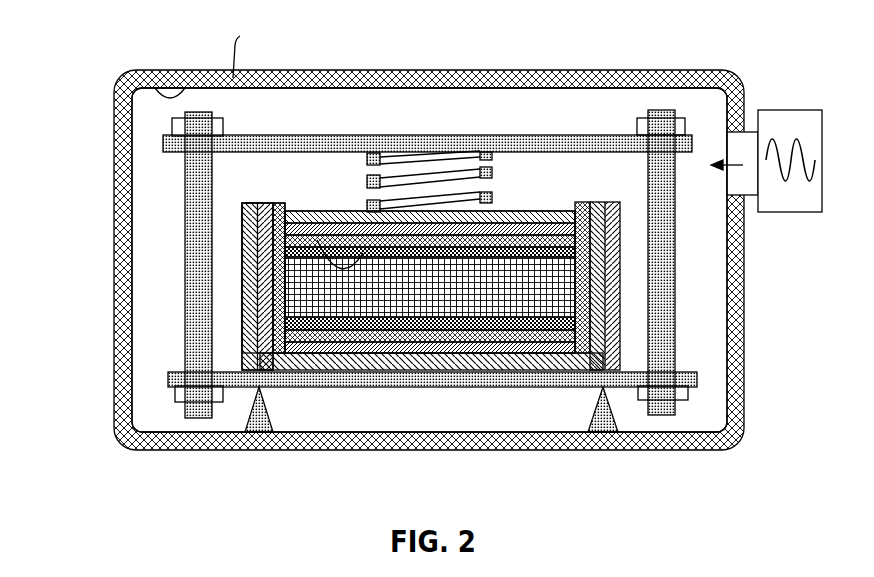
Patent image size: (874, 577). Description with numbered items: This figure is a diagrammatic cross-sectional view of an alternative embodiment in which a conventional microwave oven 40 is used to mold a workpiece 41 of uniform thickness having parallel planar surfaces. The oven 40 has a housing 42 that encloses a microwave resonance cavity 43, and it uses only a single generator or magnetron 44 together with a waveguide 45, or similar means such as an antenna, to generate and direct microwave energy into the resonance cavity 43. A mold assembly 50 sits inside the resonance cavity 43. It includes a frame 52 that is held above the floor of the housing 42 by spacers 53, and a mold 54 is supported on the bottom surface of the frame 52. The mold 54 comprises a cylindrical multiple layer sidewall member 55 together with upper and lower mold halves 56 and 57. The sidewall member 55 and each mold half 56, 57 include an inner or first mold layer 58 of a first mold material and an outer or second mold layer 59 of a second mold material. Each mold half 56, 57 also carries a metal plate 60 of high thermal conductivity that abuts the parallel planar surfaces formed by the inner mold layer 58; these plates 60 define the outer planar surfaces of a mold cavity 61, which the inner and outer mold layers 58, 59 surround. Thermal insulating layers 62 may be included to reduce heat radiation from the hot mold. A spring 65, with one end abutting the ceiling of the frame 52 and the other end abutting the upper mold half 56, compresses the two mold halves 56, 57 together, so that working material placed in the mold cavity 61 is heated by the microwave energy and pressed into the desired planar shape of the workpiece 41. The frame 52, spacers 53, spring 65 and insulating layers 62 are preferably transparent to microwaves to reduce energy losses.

The conventional microwave oven 40 is at (108, 75).
The workpiece 41 is at (320, 285).
The housing 42 is at (118, 128).
The microwave resonance cavity 43 is at (156, 88).
The generator or magnetron 44 is at (807, 212).
The waveguide 45 is at (750, 140).
The mold assembly 50 is at (158, 152).
The frame 52 is at (197, 222).
The spacers 53 is at (260, 422).
The mold 54 is at (234, 245).
The sidewall member 55 is at (268, 202).
The upper mold half 56 is at (515, 213).
The lower mold half 57 is at (428, 355).
The inner mold layer 58 is at (508, 235).
The outer mold layer 59 is at (358, 222).
The metal plate 60 is at (437, 233).
The mold cavity 61 is at (317, 240).
The thermal insulating layers 62 is at (252, 322).
The spring 65 is at (380, 182).